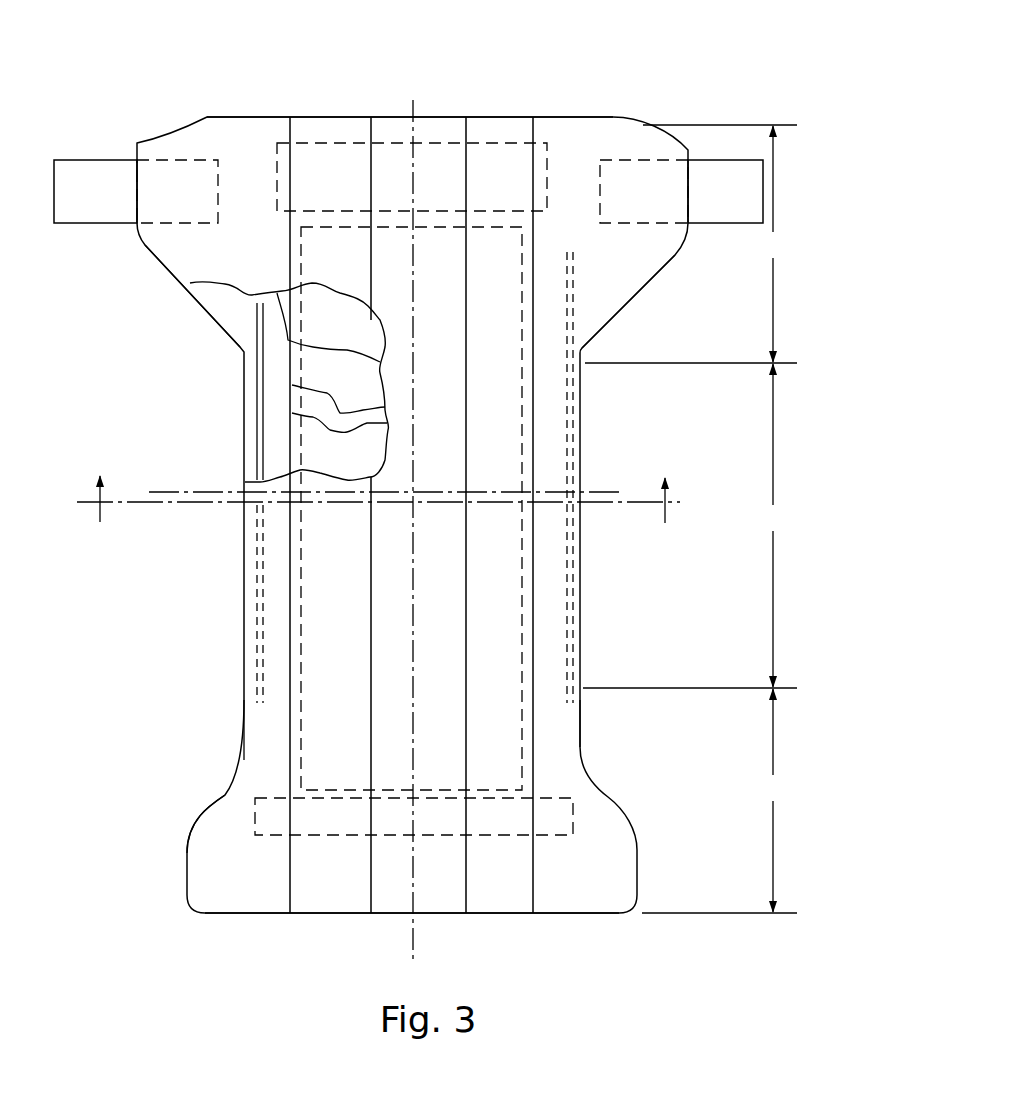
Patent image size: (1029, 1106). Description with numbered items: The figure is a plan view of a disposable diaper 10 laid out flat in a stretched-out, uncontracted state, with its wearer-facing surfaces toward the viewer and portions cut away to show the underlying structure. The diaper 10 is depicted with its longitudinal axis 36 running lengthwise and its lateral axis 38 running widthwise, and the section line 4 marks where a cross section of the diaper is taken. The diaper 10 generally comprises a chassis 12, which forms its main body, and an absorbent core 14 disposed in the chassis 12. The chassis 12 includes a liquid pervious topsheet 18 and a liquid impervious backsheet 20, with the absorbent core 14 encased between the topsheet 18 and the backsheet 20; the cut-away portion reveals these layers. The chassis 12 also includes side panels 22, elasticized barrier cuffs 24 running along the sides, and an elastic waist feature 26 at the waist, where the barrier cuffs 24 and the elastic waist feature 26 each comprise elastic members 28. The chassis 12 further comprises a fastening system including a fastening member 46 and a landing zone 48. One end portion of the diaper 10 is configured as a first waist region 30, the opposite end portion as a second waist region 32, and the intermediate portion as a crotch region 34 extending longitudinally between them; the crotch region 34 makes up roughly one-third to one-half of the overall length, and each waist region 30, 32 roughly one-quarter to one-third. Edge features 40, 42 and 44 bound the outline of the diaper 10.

The diaper 10 is at (656, 98).
The chassis 12 is at (426, 692).
The absorbent core 14 is at (290, 423).
The topsheet 18 is at (395, 665).
The backsheet 20 is at (208, 300).
The side panels 22 is at (218, 153).
The elasticized barrier cuffs 24 is at (286, 593).
The elastic waist feature 26 is at (437, 155).
The elastic members 28 is at (467, 283).
The first waist region 30 is at (719, 801).
The second waist region 32 is at (691, 244).
The crotch region 34 is at (690, 526).
The longitudinal axis 36 is at (413, 948).
The lateral axis 38 is at (602, 492).
The longitudinal side edge 40 is at (607, 323).
The leg opening edge 42 is at (244, 708).
The waist edge 44 is at (355, 117).
The fastening member 46 is at (113, 173).
The landing zone 48 is at (278, 838).
The line 4- 4 is at (378, 483).